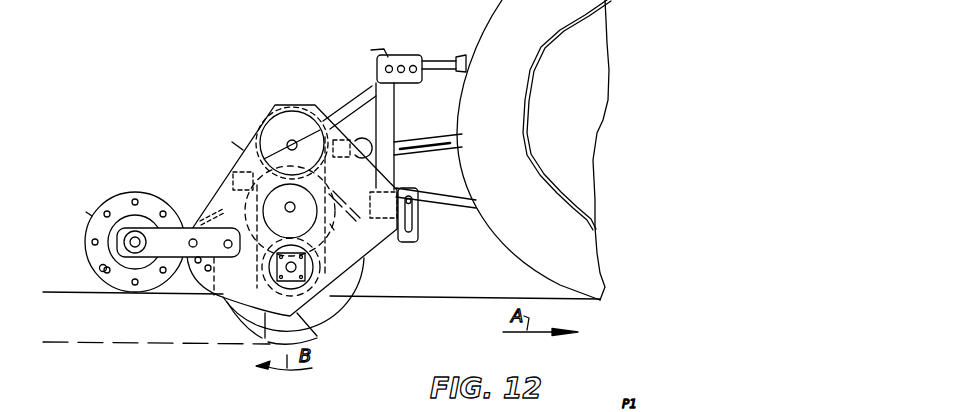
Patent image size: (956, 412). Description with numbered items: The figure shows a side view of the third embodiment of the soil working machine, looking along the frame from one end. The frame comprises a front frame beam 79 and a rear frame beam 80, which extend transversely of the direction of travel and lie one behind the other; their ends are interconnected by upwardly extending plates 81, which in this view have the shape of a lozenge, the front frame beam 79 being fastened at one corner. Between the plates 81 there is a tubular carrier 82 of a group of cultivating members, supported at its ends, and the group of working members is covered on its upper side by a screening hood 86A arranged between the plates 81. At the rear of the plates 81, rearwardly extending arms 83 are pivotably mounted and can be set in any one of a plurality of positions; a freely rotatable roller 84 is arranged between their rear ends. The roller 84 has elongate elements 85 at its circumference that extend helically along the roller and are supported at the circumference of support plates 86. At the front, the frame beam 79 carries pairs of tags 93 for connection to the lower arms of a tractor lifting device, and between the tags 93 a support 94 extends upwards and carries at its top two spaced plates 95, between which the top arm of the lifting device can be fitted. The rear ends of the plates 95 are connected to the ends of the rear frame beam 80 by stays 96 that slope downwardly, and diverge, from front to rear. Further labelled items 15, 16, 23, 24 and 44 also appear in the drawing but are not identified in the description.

The drive unit housing 15 is at (287, 110).
The housing bracket 16 is at (337, 193).
The rollers 23 is at (246, 329).
The caster wheel 24 is at (350, 322).
The axle 44 is at (268, 270).
The front frame beam 79 is at (405, 173).
The rear frame beam 80 is at (233, 175).
The plates 81 is at (232, 142).
The tubular carrier 82 is at (238, 305).
The arms 83 is at (168, 236).
The roller 84 is at (135, 193).
The elongate elements 85 is at (100, 268).
The support plates 86 is at (90, 214).
The screening hood 86A is at (334, 230).
The tags 93 is at (420, 232).
The support 94 is at (392, 112).
The spaced plates 95 is at (421, 69).
The stays 96 is at (360, 94).